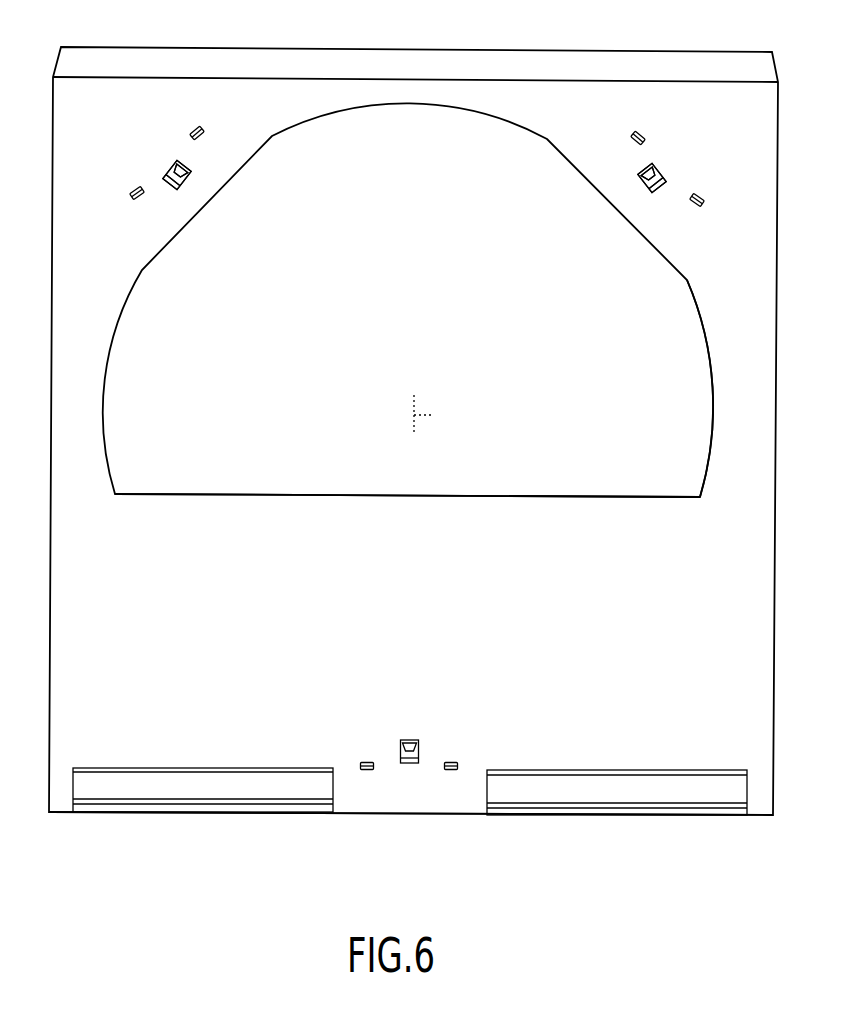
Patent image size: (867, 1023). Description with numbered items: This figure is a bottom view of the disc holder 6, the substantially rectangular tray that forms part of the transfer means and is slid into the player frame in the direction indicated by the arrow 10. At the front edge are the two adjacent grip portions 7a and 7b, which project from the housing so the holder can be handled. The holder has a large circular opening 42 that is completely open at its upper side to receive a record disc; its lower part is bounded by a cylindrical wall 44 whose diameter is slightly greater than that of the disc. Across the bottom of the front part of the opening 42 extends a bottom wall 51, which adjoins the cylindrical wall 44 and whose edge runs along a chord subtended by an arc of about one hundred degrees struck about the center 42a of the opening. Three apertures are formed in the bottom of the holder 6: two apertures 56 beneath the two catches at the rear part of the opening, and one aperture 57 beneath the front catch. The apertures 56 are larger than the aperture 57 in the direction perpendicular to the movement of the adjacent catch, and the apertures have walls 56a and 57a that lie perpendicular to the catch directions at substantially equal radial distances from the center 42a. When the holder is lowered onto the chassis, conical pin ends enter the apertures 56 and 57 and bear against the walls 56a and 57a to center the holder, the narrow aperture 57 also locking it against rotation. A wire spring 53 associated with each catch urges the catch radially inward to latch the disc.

The arrow 10 is at (418, 30).
The disc holder 6 is at (679, 820).
The grip portion 7a is at (603, 795).
The grip portion 7b is at (190, 793).
The circular opening 42 is at (682, 303).
The center of the opening 42a is at (411, 418).
The cylindrical wall 44 is at (713, 437).
The bottom wall 51 is at (520, 512).
The wire spring 53 is at (202, 136).
The aperture 56 is at (172, 188).
The wall of aperture 56a is at (170, 162).
The aperture 57 is at (421, 751).
The wall of aperture 57a is at (409, 766).